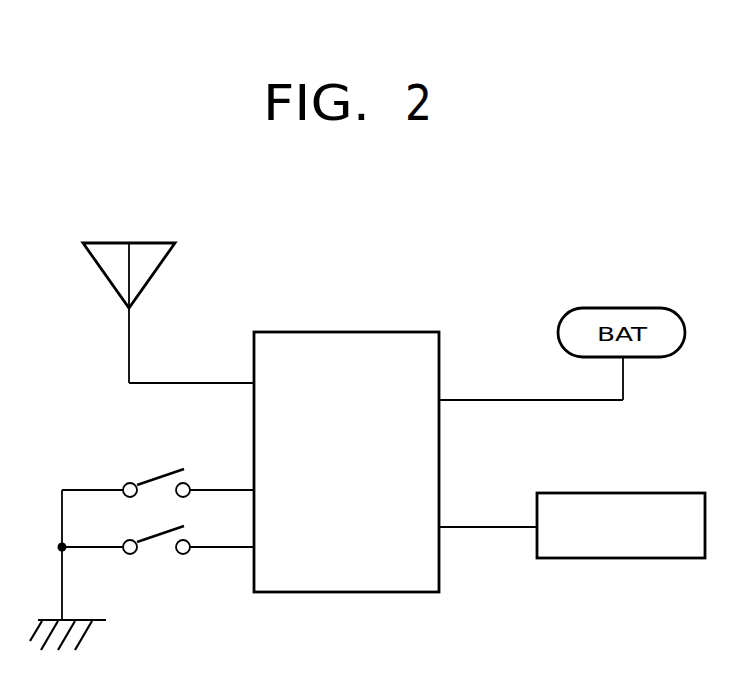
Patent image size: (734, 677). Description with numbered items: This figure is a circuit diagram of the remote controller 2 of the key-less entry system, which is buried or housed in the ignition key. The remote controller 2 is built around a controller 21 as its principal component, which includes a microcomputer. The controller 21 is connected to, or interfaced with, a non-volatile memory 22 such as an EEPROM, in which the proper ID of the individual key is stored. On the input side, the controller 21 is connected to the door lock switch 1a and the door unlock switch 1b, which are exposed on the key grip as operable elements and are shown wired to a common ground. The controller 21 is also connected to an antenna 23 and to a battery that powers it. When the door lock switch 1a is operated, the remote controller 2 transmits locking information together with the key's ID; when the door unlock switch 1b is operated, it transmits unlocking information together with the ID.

The remote controller 2 is at (397, 297).
The controller 21 is at (305, 332).
The non-volatile memory 22 is at (628, 493).
The antenna 23 is at (112, 243).
The door lock switch 1a is at (150, 472).
The door unlock switch 1b is at (150, 534).